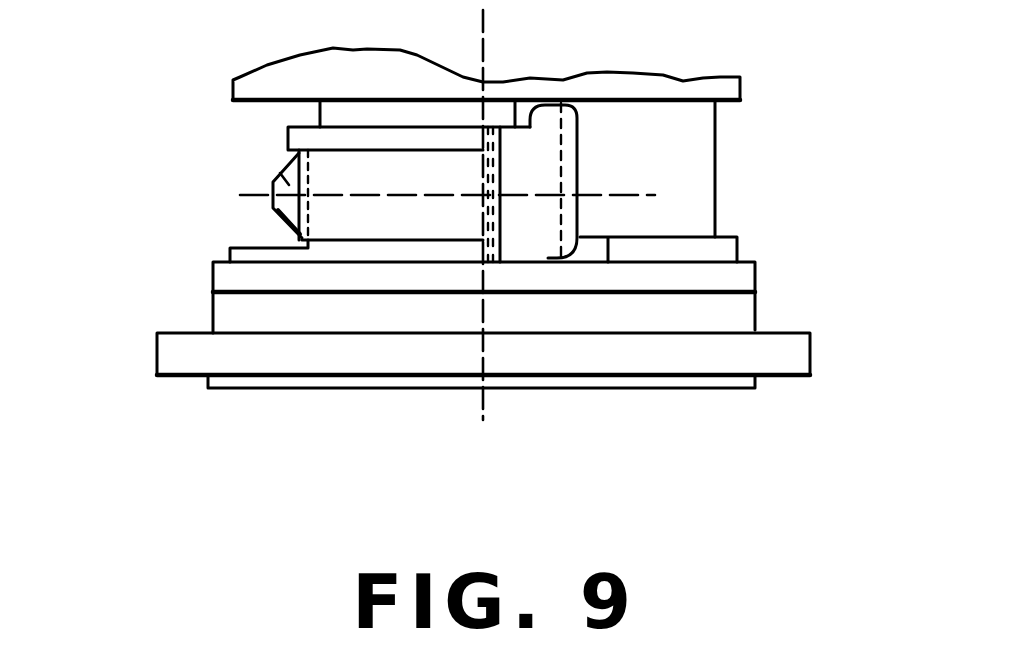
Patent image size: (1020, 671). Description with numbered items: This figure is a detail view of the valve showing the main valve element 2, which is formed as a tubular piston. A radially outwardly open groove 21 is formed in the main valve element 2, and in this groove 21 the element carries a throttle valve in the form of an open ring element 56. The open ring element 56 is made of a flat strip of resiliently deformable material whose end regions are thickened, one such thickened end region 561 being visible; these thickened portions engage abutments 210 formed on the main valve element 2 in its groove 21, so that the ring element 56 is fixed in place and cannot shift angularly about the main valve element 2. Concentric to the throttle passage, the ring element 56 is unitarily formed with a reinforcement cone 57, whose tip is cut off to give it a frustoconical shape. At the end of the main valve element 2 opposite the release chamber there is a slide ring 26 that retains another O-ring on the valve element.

The main valve element 2 is at (778, 105).
The groove 21 is at (716, 197).
The abutments 210 is at (403, 430).
The slide ring 26 is at (181, 353).
The open ring element 56 is at (340, 222).
The thickened end region 561 is at (523, 237).
The reinforcement cone 57 is at (287, 182).